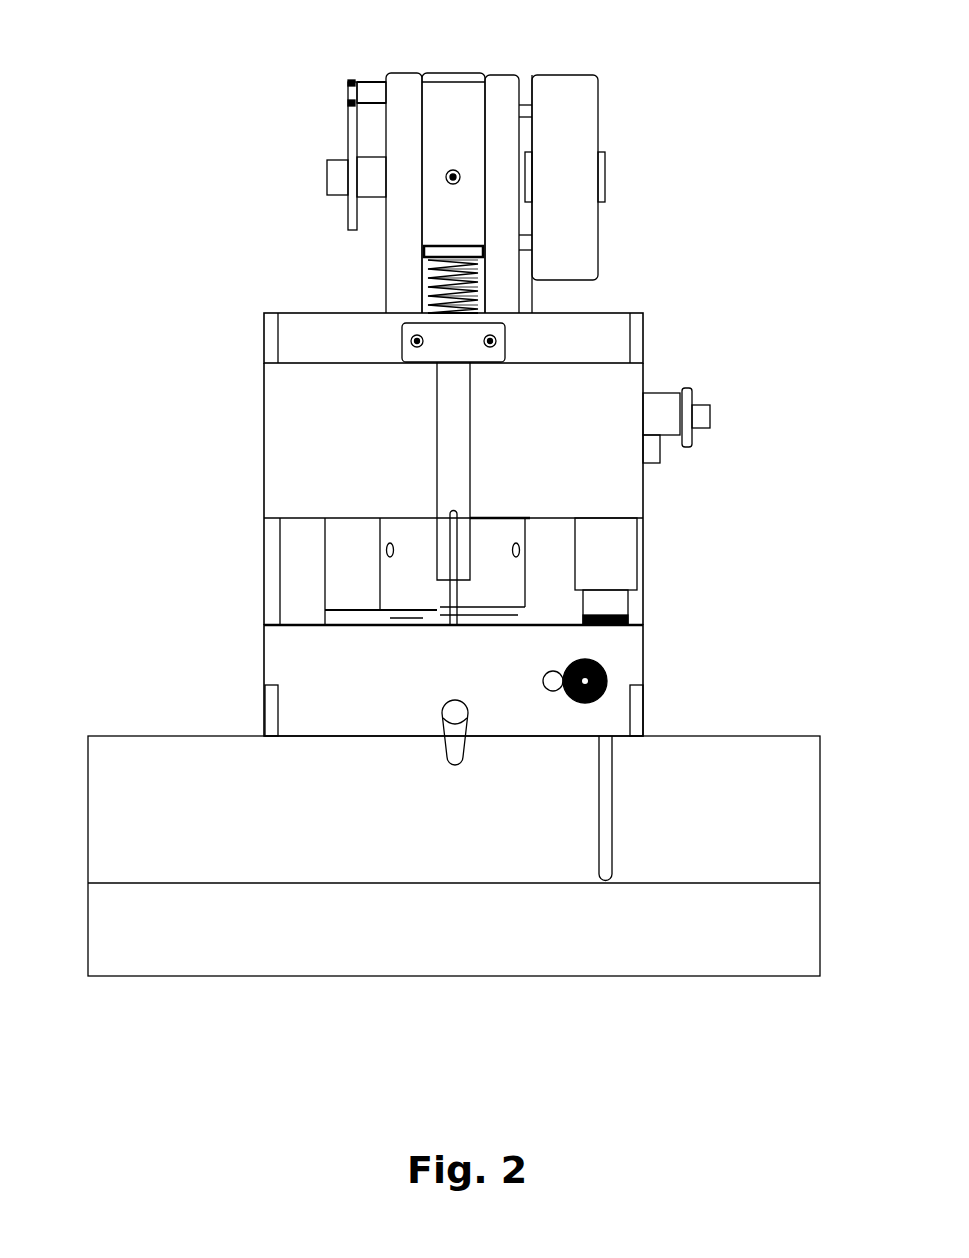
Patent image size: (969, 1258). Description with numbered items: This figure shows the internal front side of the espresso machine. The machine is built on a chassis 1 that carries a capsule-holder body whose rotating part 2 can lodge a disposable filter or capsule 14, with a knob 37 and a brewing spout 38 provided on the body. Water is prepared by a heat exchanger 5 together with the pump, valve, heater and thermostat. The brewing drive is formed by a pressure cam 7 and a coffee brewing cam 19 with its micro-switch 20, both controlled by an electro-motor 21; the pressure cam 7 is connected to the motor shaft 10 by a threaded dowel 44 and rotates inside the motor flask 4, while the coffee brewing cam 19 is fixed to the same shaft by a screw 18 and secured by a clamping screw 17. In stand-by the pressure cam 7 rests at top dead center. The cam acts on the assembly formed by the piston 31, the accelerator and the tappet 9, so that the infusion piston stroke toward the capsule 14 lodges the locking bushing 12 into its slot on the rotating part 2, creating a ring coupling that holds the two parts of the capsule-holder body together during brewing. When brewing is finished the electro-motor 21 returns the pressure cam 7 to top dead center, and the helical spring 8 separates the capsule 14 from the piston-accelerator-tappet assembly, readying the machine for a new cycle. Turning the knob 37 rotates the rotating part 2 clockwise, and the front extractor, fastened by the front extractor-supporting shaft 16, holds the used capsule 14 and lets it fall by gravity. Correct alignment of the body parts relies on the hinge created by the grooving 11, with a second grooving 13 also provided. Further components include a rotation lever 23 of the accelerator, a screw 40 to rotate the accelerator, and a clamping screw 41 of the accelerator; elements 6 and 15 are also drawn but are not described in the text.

The chassis 1 is at (230, 795).
The rotating part 2 is at (327, 657).
The motor flask 4 is at (313, 340).
The heat exchanger 5 is at (315, 463).
The guide block 6 is at (400, 590).
The pressure cam 7 is at (478, 127).
The helical spring 8 is at (478, 264).
The tappet 9 is at (490, 303).
The motor shaft 10 is at (348, 133).
The grooving 11 is at (295, 529).
The locking bushing 12 is at (607, 557).
The second grooving 13 is at (600, 617).
The capsule 14 is at (360, 624).
The intermediate plate 15 is at (400, 610).
The front extractor-supporting shaft 16 is at (447, 425).
The clamping screw of the brewing cam 17 is at (490, 341).
The screw 18 is at (335, 177).
The coffee brewing cam 19 is at (440, 568).
The micro-switch 20 is at (350, 83).
The electro-motor 21 is at (577, 127).
The rotation lever of the accelerator 23 is at (692, 400).
The piston 31 is at (663, 405).
The knob 37 is at (586, 681).
The brewing spout 38 is at (467, 736).
The screw to rotate the accelerator 40 is at (660, 452).
The clamping screw of the accelerator 41 is at (700, 423).
The threaded dowel 44 is at (453, 177).